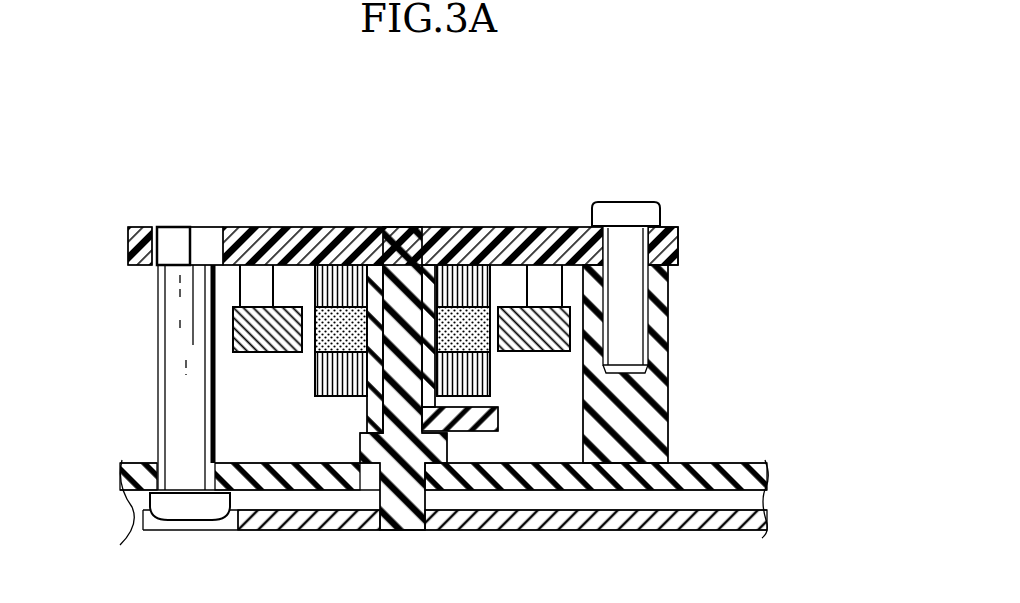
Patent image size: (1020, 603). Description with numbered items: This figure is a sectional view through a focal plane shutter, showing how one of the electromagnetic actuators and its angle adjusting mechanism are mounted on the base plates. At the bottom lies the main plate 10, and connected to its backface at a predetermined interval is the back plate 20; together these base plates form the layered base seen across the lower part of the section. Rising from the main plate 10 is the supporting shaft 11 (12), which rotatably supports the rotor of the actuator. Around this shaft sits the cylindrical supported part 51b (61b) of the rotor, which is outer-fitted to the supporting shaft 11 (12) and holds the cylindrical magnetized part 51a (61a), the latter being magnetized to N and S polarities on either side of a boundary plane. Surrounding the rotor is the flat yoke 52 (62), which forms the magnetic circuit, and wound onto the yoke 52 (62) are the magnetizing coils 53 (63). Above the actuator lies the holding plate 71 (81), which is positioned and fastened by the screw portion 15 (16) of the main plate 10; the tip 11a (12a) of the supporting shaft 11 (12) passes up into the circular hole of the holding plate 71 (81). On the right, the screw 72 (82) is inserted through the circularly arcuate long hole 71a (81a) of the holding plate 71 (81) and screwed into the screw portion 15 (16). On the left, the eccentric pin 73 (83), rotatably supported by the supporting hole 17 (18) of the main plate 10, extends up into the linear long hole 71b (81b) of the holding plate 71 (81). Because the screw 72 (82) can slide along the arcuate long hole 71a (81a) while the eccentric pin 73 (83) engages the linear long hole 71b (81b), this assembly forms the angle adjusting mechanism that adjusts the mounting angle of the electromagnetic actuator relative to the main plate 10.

The main plate 10 is at (690, 459).
The back plate 20 is at (688, 531).
The supporting shaft 11 is at (383, 348).
The supporting shaft 12 is at (387, 260).
The tip of the supporting shaft 11a is at (431, 262).
The tip of the supporting shaft 12a is at (381, 280).
The screw portion 15 is at (496, 364).
The screw portion 16 is at (668, 373).
The supporting hole 17 is at (154, 373).
The supporting hole 18 is at (164, 472).
The magnetized part 51a is at (304, 264).
The magnetized part 61a is at (330, 316).
The supported part 51b is at (391, 432).
The supported part 61b is at (367, 404).
The yoke 52 is at (394, 359).
The yoke 62 is at (238, 354).
The magnetizing coil 53 is at (482, 260).
The magnetizing coil 63 is at (469, 310).
The holding plate 71 is at (434, 212).
The holding plate 81 is at (533, 228).
The circularly arcuate long hole 71a is at (705, 243).
The circularly arcuate long hole 81a is at (660, 240).
The linear long hole 71b is at (217, 181).
The linear long hole 81b is at (202, 231).
The screw 72 is at (635, 251).
The screw 82 is at (628, 216).
The eccentric pin 73 is at (116, 201).
The eccentric pin 83 is at (162, 226).